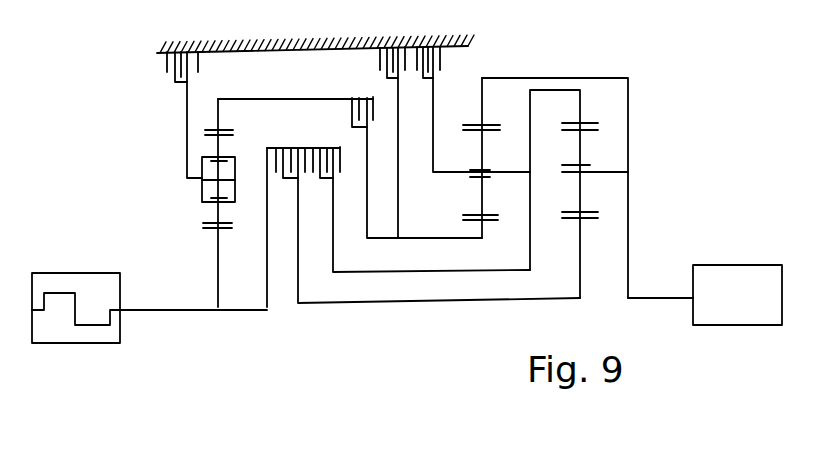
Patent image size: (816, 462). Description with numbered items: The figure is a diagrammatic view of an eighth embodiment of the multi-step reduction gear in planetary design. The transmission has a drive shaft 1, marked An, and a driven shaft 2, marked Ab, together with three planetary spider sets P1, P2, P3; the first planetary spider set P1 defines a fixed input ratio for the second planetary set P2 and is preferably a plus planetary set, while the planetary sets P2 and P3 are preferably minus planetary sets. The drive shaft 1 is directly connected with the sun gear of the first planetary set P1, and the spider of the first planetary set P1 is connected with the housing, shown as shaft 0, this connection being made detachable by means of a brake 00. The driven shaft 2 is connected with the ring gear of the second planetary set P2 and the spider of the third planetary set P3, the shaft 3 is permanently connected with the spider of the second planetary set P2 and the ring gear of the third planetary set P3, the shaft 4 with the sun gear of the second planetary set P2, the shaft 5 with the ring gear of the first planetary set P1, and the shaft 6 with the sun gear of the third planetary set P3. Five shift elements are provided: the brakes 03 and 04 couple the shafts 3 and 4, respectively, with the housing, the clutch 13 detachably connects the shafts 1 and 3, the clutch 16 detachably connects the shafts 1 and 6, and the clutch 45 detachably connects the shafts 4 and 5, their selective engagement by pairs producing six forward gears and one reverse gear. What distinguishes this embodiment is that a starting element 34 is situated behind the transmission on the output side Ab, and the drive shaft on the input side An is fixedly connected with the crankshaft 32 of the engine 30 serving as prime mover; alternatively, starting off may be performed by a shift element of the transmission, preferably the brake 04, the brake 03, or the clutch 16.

The brake 00 is at (167, 70).
The shaft 0 is at (224, 179).
The drive shaft 1 is at (217, 233).
The shaft 5 is at (219, 124).
The clutch 45 is at (345, 112).
The brake 04 is at (380, 63).
The brake 03 is at (441, 62).
The clutch 16 is at (290, 151).
The clutch 13 is at (326, 151).
The driven shaft 2 is at (545, 138).
The shaft 3 is at (534, 140).
The shaft 4 is at (480, 227).
The shaft 6 is at (580, 226).
The first planetary spider set P1 is at (171, 203).
The second planetary spider set P2 is at (578, 164).
The third planetary spider set P3 is at (636, 164).
The drive shaft An is at (193, 290).
The driven shaft Ab is at (660, 281).
The engine 30 is at (80, 345).
The crankshaft 32 is at (73, 308).
The starting element 34 is at (720, 330).